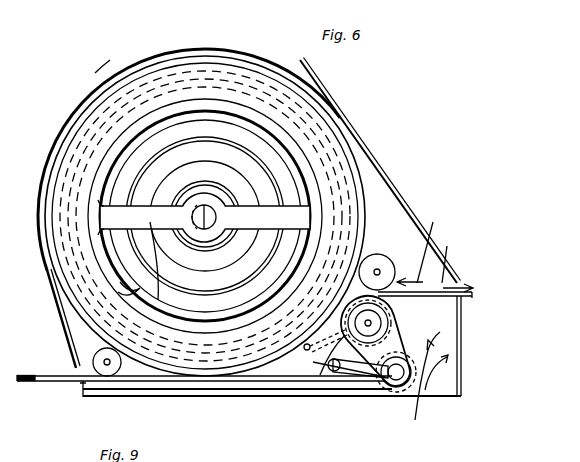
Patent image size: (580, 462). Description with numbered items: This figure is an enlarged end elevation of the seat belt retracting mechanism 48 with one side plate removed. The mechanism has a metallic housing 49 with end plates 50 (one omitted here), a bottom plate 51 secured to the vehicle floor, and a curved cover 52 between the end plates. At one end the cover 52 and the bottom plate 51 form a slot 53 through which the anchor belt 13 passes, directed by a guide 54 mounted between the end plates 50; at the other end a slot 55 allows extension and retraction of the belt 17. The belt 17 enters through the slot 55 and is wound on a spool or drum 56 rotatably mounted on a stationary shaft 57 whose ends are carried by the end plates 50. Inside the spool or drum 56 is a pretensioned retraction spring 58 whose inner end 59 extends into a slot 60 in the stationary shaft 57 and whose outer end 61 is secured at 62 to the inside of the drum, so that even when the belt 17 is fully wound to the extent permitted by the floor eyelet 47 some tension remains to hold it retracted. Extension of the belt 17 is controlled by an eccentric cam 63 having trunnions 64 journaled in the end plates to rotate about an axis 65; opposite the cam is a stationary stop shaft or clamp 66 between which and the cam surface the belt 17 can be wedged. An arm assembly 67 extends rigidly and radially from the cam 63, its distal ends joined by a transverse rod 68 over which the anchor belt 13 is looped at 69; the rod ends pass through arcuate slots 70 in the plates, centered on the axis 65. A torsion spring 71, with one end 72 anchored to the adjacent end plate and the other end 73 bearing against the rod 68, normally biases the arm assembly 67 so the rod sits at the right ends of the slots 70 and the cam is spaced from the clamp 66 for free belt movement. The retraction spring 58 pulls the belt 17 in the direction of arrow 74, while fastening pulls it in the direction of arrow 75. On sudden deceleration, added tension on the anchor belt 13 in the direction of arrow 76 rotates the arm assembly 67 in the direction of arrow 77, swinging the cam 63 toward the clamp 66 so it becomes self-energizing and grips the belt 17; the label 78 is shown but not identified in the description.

The anchor belt 13 is at (34, 380).
The belt 17 is at (449, 257).
The floor eyelet 47 is at (45, 132).
The retracting mechanism 48 is at (86, 73).
The metallic housing 49 is at (33, 161).
The end plates 50 is at (355, 166).
The bottom plate 51 is at (217, 390).
The curved cover 52 is at (197, 50).
The slot 53 is at (83, 385).
The guide 54 is at (66, 333).
The slot 55 is at (455, 330).
The spool or drum 56 is at (270, 127).
The stationary shaft 57 is at (192, 217).
The retraction spring 58 is at (282, 148).
The inner end 59 is at (218, 217).
The slot 60 is at (205, 205).
The outer end 61 is at (138, 254).
The securing point 62 is at (107, 217).
The eccentric cam 63 is at (375, 254).
The trunnions 64 is at (327, 341).
The axis of rotation 65 is at (372, 324).
The stop shaft or clamp 66 is at (386, 266).
The arm assembly 67 is at (418, 337).
The transverse rod 68 is at (392, 378).
The loop 69 is at (366, 372).
The arcuate slots 70 is at (345, 372).
The torsion spring 71 is at (316, 354).
The end of torsion spring 72 is at (306, 350).
The end of torsion spring 73 is at (401, 384).
The arrow 74 is at (429, 244).
The arrow 75 is at (472, 286).
The arrow 76 is at (28, 371).
The arrow 77 is at (421, 389).
The direction arrow 78 is at (428, 392).